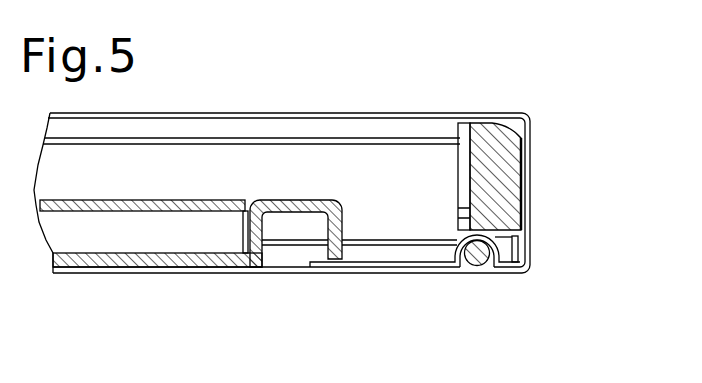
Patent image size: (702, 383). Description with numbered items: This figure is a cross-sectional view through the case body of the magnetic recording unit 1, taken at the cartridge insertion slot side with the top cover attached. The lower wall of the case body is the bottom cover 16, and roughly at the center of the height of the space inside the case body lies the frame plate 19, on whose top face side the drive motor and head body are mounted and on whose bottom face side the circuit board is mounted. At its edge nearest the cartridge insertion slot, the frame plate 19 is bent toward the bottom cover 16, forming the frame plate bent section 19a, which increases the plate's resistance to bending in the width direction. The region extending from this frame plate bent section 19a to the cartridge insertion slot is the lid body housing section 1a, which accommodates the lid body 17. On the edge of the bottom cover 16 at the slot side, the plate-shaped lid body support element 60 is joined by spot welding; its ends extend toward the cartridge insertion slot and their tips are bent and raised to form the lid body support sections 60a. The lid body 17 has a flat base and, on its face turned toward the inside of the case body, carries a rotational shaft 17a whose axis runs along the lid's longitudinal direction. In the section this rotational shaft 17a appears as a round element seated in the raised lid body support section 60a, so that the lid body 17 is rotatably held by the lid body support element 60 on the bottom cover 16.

The magnetic recording unit 1 is at (174, 108).
The lid body housing section 1a is at (400, 223).
The bottom cover 16 is at (273, 277).
The lid body 17 is at (500, 173).
The rotational shaft 17a is at (480, 269).
The frame plate 19 is at (130, 258).
The frame plate bent section 19a is at (327, 227).
The lid body support element 60 is at (389, 264).
The lid body support section 60a is at (498, 234).